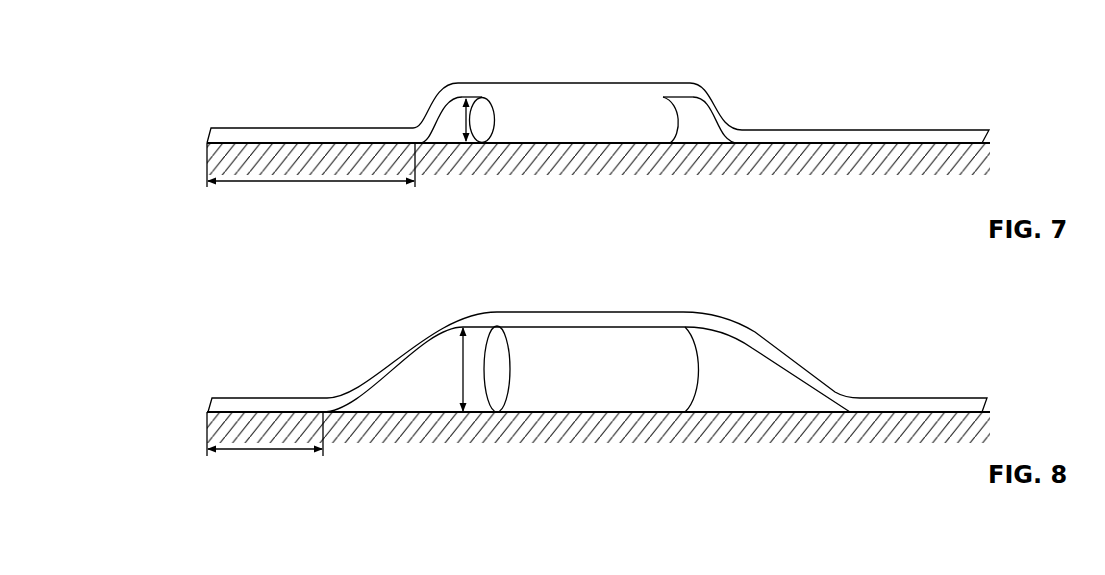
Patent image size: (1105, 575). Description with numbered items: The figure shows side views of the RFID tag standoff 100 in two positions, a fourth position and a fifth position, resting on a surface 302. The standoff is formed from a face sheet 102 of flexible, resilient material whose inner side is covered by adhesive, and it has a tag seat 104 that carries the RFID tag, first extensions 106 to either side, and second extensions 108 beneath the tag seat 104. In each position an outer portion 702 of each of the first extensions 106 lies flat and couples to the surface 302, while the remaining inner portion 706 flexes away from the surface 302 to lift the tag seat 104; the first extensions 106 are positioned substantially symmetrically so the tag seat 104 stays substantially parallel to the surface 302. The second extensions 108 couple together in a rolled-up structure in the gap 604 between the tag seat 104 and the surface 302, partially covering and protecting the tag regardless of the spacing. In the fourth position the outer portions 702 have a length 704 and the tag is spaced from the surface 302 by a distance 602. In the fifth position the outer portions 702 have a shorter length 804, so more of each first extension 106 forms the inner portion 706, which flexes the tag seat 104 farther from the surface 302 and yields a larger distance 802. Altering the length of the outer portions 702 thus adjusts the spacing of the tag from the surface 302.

In FIG. 7, the RFID tag standoff 100 is at (313, 34).
In FIG. 8, the RFID tag standoff 100 is at (331, 291).
In FIG. 7, the face sheet 102 is at (528, 97).
In FIG. 8, the face sheet 102 is at (497, 369).
In FIG. 7, the tag seat 104 is at (590, 80).
In FIG. 8, the tag seat 104 is at (613, 312).
In FIG. 7, the first extensions 106 is at (277, 128).
In FIG. 8, the first extensions 106 is at (273, 397).
In FIG. 7, the second extensions 108 is at (638, 97).
In FIG. 8, the second extensions 108 is at (640, 325).
In FIG. 7, the surface 302 is at (430, 145).
In FIG. 8, the surface 302 is at (720, 412).
In FIG. 7, the distance 602 is at (463, 122).
In FIG. 7, the gap 604 is at (695, 132).
In FIG. 7, the outer portion 702 is at (340, 128).
In FIG. 8, the outer portion 702 is at (337, 395).
In FIG. 7, the length 704 is at (348, 183).
In FIG. 7, the inner portion 706 is at (452, 82).
In FIG. 8, the inner portion 706 is at (437, 325).
In FIG. 8, the distance 802 is at (462, 378).
In FIG. 8, the length 804 is at (238, 452).